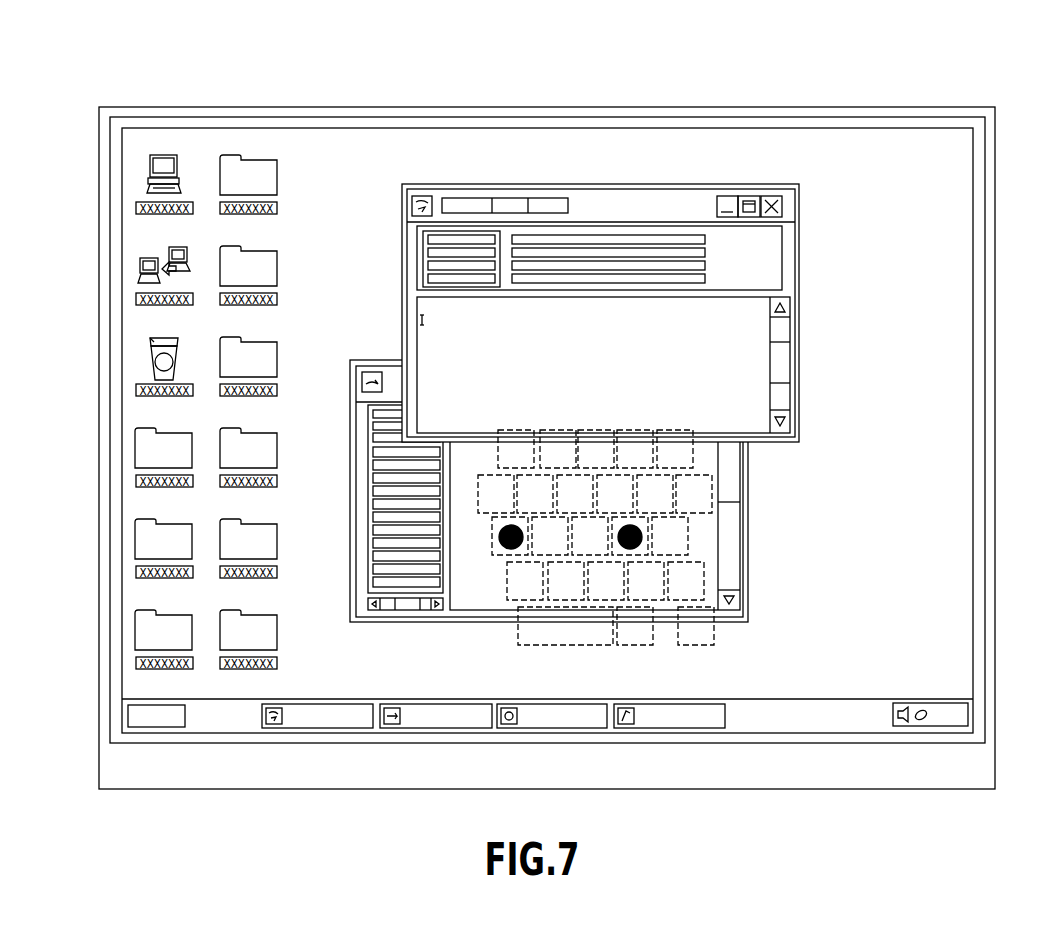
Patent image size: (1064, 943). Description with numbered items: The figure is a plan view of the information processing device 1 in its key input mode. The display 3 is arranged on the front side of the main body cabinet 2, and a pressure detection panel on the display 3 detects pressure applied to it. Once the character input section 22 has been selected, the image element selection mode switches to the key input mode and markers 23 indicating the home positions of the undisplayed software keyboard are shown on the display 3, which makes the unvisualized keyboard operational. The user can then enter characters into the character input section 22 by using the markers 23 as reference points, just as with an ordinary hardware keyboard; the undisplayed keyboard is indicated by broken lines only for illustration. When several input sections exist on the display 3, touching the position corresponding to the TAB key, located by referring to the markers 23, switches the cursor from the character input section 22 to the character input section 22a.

The information processing device 1 is at (173, 84).
The main body cabinet 2 is at (105, 208).
The display 3 is at (933, 210).
The character input section 22 is at (480, 236).
The character input section 22a is at (419, 320).
The markers 23 is at (517, 526).